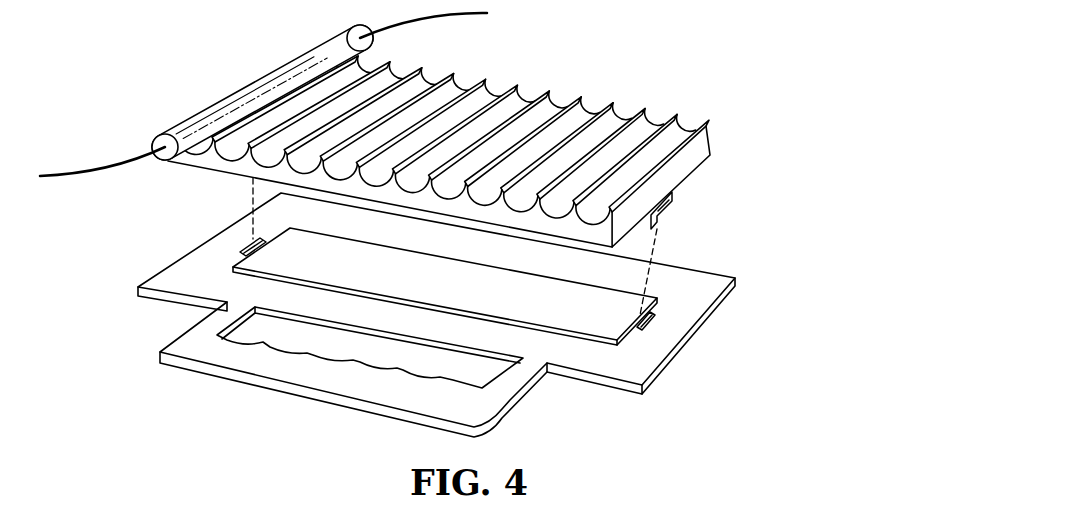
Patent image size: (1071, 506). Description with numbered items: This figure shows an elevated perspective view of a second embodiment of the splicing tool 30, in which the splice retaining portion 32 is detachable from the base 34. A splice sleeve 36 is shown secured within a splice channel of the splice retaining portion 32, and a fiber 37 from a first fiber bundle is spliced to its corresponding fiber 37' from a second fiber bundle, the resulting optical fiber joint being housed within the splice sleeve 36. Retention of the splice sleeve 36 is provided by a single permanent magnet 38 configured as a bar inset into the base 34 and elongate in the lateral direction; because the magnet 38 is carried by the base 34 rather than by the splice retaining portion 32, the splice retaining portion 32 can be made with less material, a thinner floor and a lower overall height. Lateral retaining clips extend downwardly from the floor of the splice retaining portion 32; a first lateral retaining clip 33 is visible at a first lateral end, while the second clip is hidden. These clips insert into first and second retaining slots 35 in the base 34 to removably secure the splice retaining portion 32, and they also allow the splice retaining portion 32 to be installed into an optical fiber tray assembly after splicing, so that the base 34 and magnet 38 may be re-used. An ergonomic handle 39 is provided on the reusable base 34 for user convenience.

The tool 30 is at (513, 74).
The splice retaining portion 32 is at (716, 131).
The first lateral retaining clip 33 is at (674, 203).
The base 34 is at (177, 284).
The retaining slots 35 is at (247, 247).
The splice sleeve 36 is at (286, 65).
The fiber 37 is at (102, 142).
The corresponding fiber 37' is at (430, 35).
The permanent magnet 38 is at (631, 300).
The handle 39 is at (178, 352).